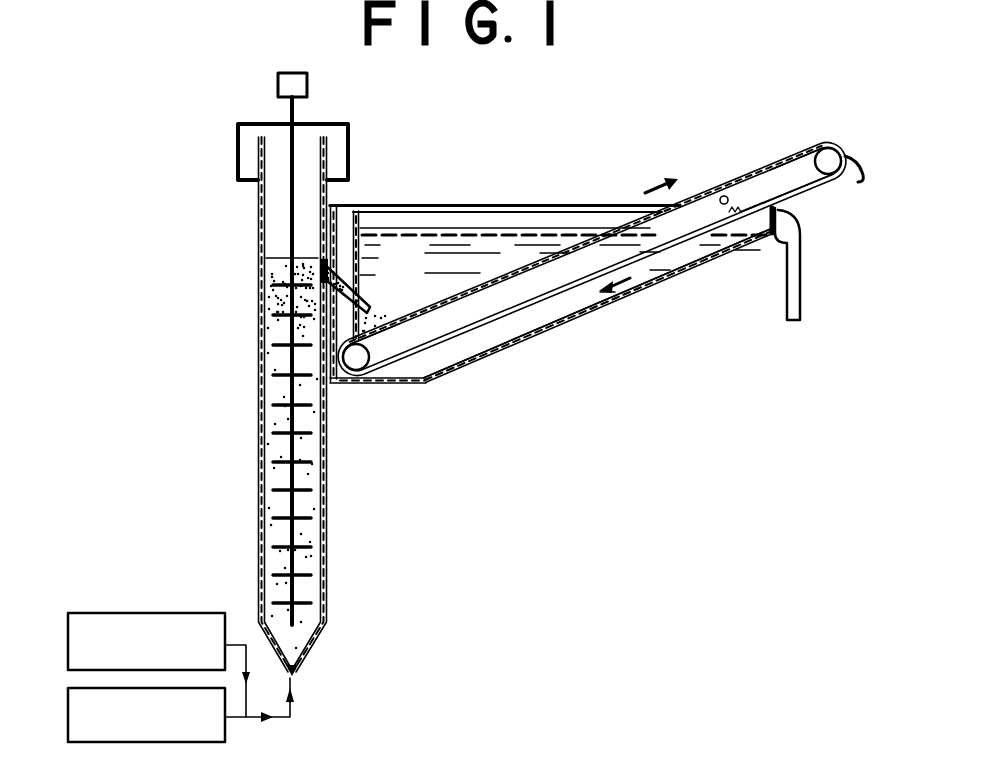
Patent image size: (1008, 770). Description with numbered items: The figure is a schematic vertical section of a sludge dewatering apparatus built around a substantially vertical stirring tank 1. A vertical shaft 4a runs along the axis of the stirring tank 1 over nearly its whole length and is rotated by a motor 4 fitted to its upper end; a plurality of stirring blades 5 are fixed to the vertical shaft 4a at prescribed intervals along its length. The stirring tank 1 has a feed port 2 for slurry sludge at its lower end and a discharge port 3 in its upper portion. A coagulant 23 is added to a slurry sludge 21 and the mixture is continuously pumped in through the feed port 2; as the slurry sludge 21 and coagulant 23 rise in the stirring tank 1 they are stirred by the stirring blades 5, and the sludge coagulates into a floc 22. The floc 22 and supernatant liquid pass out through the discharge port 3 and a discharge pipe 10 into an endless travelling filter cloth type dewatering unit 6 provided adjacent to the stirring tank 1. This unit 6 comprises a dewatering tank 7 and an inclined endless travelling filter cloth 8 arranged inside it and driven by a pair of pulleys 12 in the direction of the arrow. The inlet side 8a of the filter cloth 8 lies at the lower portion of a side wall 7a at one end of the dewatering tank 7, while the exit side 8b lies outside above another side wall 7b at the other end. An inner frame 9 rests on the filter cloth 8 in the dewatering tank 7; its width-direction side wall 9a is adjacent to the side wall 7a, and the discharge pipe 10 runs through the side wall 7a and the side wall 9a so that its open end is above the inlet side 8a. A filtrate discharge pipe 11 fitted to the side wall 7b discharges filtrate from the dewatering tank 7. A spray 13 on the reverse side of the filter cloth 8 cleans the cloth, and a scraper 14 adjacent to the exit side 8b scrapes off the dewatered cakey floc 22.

The stirring tank 1 is at (249, 281).
The feed port 2 is at (300, 678).
The discharge port 3 is at (292, 245).
The motor 4 is at (312, 86).
The vertical shaft 4a is at (258, 204).
The stirring blades 5 is at (282, 517).
The endless travelling filter cloth type dewatering unit 6 is at (474, 204).
The dewatering tank 7 is at (574, 331).
The side wall 7a is at (336, 219).
The another side wall 7b is at (783, 192).
The endless travelling filter cloth 8 is at (445, 312).
The inlet side 8a is at (374, 333).
The exit side 8b is at (797, 142).
The inner frame 9 is at (421, 210).
The side wall 9a is at (362, 260).
The discharge pipe 10 is at (366, 290).
The filtrate discharge pipe 11 is at (800, 300).
The pulleys 12 is at (360, 372).
The spray 13 is at (717, 197).
The scraper 14 is at (853, 184).
The slurry sludge 21 is at (228, 735).
The floc 22 is at (270, 305).
The coagulant 23 is at (140, 612).